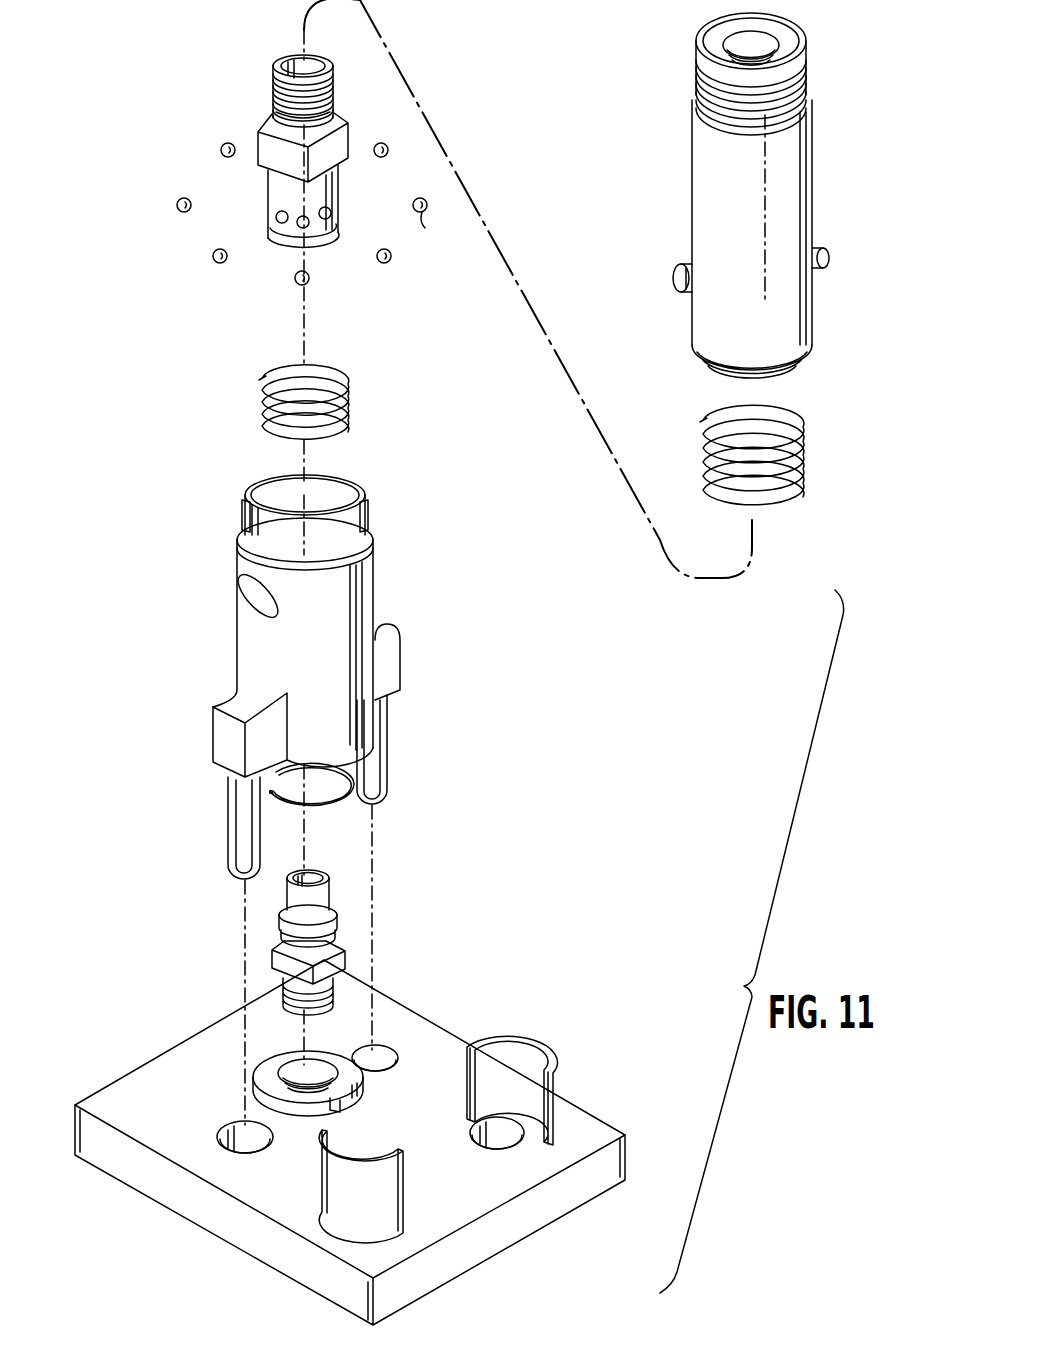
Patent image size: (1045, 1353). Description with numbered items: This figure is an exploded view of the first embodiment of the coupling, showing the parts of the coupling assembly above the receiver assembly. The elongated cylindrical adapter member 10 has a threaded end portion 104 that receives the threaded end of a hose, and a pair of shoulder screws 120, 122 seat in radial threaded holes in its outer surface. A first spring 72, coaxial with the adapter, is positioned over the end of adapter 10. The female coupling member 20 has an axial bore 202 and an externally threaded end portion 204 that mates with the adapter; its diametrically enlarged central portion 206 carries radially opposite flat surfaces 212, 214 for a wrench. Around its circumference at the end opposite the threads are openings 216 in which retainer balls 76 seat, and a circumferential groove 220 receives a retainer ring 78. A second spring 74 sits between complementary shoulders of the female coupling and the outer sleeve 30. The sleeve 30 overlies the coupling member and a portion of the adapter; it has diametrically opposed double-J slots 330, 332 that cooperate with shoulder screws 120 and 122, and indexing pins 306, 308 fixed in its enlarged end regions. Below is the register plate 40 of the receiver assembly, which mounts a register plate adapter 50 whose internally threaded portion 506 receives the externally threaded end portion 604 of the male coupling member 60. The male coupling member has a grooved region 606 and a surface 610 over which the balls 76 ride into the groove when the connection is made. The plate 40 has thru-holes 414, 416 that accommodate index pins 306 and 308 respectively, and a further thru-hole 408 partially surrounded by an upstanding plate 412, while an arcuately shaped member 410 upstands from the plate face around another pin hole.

The adapter member 10 is at (758, 195).
The threaded end portion 104 is at (805, 66).
The shoulder screw 120 is at (676, 270).
The shoulder screw 122 is at (823, 258).
The first spring 72 is at (805, 428).
The female coupling member 20 is at (306, 154).
The axial bore 202 is at (300, 72).
The externally threaded end portion 204 is at (335, 97).
The flat surface portion 212 is at (270, 112).
The flat surface portion 214 is at (334, 146).
The central portion 206 is at (283, 170).
The circumferential groove 220 is at (270, 236).
The openings 216 is at (305, 228).
The retainer balls 76 is at (391, 254).
The second spring 74 is at (345, 423).
The outer sleeve 30 is at (311, 676).
The double-J slot 330 is at (242, 512).
The double-J slot 332 is at (368, 512).
The indexing pin 306 is at (237, 808).
The indexing pin 308 is at (381, 755).
The retainer ring 78 is at (330, 806).
The male coupling member 60 is at (306, 950).
The surface 610 is at (284, 928).
The grooved region 606 is at (296, 940).
The externally threaded end portion 604 is at (300, 1004).
The register plate 40 is at (350, 1142).
The register plate adapter 50 is at (262, 1075).
The internally threaded enlarged diameter portion 506 is at (372, 1098).
The thru-hole 414 is at (242, 1138).
The thru-hole 416 is at (390, 1055).
The thru-hole 408 is at (498, 1135).
The arcuately shaped member 410 is at (330, 1178).
The upstanding plate 412 is at (553, 1060).